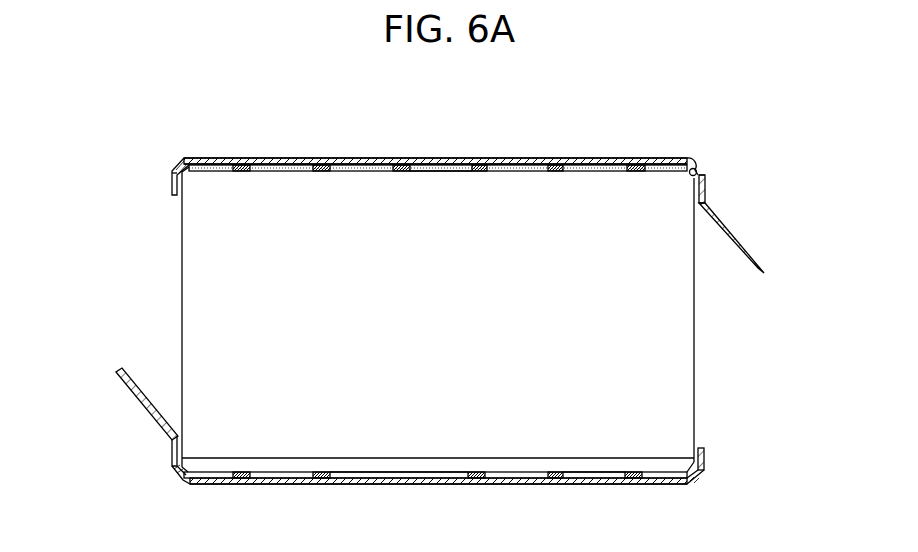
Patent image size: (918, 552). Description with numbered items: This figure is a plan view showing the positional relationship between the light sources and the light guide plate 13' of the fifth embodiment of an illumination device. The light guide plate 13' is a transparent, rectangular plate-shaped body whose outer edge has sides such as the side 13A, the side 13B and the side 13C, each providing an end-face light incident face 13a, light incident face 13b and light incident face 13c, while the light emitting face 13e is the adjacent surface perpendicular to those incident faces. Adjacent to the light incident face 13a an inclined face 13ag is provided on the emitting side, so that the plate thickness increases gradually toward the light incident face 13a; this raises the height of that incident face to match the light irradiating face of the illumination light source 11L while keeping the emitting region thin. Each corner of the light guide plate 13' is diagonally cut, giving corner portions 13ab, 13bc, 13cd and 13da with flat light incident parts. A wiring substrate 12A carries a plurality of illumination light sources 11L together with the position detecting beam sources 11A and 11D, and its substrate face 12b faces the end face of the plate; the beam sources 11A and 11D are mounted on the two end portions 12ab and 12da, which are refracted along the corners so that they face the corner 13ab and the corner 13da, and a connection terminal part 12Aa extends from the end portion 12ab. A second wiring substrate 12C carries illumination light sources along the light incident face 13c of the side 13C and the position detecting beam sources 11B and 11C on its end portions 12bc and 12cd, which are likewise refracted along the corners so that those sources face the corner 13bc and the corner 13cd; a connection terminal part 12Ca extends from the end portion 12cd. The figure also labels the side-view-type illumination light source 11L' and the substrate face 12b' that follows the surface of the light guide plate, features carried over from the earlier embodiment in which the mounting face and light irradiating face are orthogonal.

The wiring substrate 12C is at (217, 157).
The corner portion 13bc is at (183, 165).
The end portion 12bc is at (172, 171).
The position detecting beam source 11B is at (187, 178).
The side 13C is at (283, 158).
The light incident face 13c is at (372, 158).
The light emitting face 13e is at (500, 215).
The light guide plate 13' is at (435, 127).
The corner portion 13cd is at (697, 168).
The end portion 12cd is at (702, 170).
The position detecting beam source 11C is at (688, 172).
The connection terminal part 12Ca is at (755, 272).
The illumination light source 11L' is at (439, 206).
The substrate face 12b' is at (441, 211).
The side 13B is at (182, 286).
The light incident face 13b is at (182, 350).
The connection terminal part 12Aa is at (120, 382).
The position detecting beam source 11A is at (186, 472).
The wiring substrate 12A is at (298, 471).
The illumination light source 11L is at (437, 437).
The substrate face 12b is at (438, 445).
The inclined face 13ag is at (632, 468).
The position detecting beam source 11D is at (690, 465).
The end portion 12ab is at (175, 476).
The corner portion 13ab is at (182, 481).
The side 13A is at (372, 484).
The light incident face 13a is at (522, 484).
The end portion 12da is at (705, 470).
The corner portion 13da is at (696, 487).